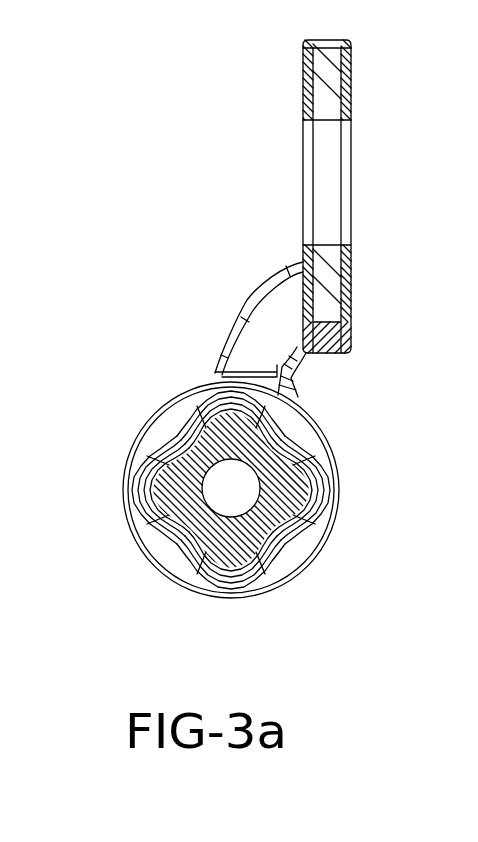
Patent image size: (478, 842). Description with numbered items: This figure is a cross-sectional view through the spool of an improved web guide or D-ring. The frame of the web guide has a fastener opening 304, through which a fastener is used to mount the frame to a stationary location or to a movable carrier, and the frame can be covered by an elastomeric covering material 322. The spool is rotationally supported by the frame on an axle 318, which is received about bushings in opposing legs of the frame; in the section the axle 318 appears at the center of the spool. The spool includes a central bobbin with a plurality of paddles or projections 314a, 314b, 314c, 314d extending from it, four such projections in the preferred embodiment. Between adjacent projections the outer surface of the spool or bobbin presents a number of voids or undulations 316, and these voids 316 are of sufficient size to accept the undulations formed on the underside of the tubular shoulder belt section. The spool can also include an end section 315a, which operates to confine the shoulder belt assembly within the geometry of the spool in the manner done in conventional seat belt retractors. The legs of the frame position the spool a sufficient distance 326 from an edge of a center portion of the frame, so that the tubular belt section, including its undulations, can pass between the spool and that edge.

The fastener opening 304 is at (330, 245).
The elastomeric covering material 322 is at (303, 72).
The distance 326 is at (305, 376).
The projection 314a is at (205, 392).
The projection 314b is at (333, 483).
The projection 314c is at (277, 590).
The projection 314d is at (152, 497).
The voids or undulations 316 is at (175, 442).
The axle 318 is at (228, 498).
The end section 315a is at (195, 597).